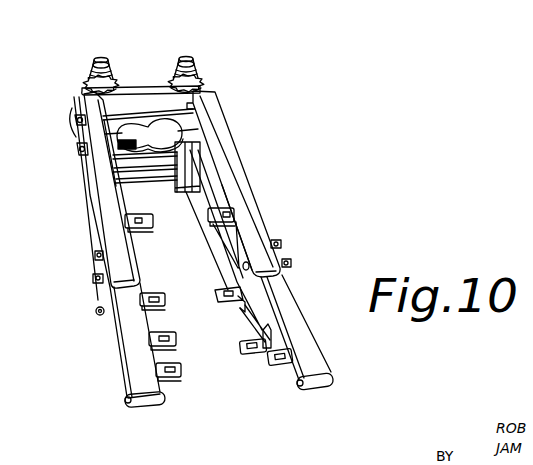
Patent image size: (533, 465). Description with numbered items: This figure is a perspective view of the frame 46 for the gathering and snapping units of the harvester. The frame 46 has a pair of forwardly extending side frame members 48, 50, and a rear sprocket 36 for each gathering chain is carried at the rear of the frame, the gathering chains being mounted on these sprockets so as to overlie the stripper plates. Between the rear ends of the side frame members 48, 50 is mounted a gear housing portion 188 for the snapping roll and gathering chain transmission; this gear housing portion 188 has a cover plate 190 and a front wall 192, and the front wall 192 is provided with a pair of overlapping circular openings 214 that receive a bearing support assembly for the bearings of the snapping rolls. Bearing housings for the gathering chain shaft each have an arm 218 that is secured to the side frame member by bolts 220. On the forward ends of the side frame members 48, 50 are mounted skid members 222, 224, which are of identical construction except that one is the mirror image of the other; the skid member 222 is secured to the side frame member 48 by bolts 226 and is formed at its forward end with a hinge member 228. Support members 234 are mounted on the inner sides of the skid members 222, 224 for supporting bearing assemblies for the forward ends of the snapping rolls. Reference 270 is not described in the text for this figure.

The rear sprocket 36 is at (93, 66).
The gear housing portion 188 is at (141, 84).
The cover plate 190 is at (200, 98).
The front wall 192 is at (195, 127).
The frame 46 is at (237, 162).
The side frame member 48 is at (243, 194).
The side frame member 50 is at (112, 233).
The overlapping circular openings 214 is at (120, 145).
The arm 218 is at (74, 110).
The bolts 220 is at (82, 122).
The skid member 222 is at (297, 326).
The skid member 224 is at (135, 361).
The bolts 226 is at (96, 311).
The hinge member 228 is at (140, 404).
The deck rail 270 is at (143, 180).
The support members 234 is at (225, 303).